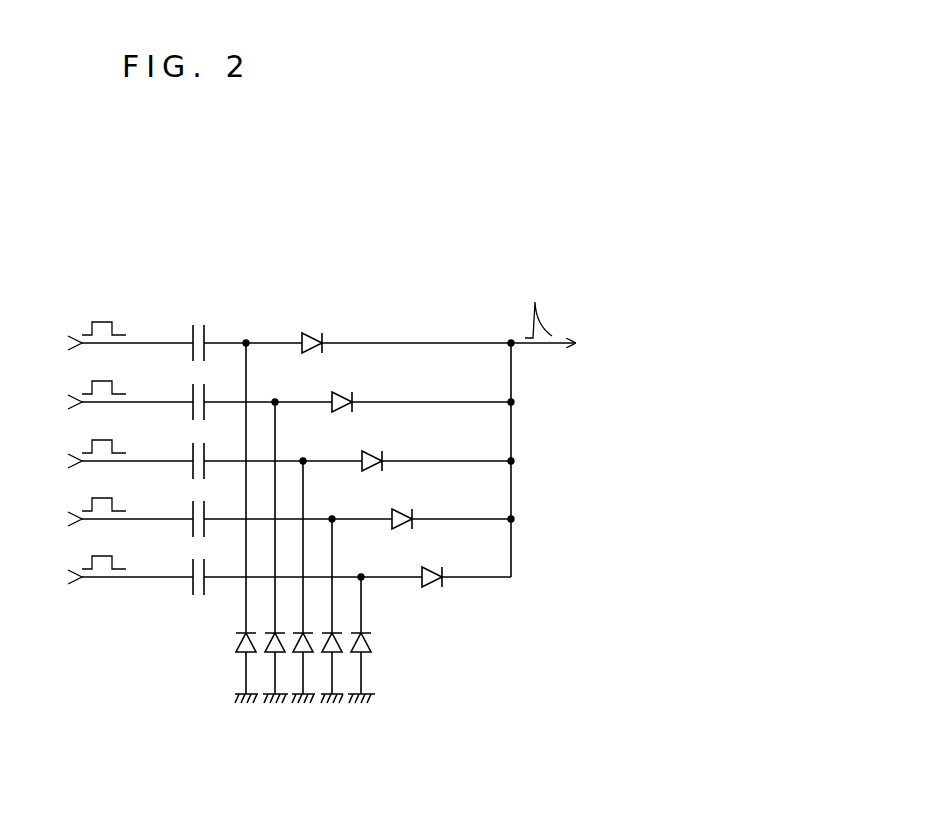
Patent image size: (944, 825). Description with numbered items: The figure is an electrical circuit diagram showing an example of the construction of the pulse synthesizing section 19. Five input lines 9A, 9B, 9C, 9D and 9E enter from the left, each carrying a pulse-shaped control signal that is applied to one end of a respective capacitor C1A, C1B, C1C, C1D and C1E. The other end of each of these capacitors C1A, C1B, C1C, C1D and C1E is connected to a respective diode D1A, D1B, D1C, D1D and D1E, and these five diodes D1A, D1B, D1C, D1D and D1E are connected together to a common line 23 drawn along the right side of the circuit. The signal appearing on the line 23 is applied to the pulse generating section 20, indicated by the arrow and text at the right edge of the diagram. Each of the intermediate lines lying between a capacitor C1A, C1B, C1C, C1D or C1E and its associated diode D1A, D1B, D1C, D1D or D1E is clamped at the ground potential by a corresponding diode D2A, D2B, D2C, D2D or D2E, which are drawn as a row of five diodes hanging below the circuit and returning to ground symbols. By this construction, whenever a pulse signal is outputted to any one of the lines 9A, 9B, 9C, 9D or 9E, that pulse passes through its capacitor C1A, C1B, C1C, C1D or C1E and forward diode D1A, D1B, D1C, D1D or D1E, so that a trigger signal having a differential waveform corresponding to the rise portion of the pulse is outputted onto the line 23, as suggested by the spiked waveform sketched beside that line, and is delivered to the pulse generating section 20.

The pulse synthesizing section 19 is at (270, 282).
The line 9A is at (71, 342).
The line 9B is at (71, 401).
The line 9C is at (71, 460).
The line 9D is at (71, 518).
The line 9E is at (71, 576).
The capacitor C1A is at (192, 332).
The capacitor C1B is at (207, 391).
The capacitor C1C is at (222, 450).
The capacitor C1D is at (237, 509).
The capacitor C1E is at (252, 566).
The diode D1A is at (406, 324).
The diode D1B is at (421, 383).
The diode D1C is at (436, 444).
The diode D1D is at (451, 503).
The diode D1E is at (466, 559).
The diode D2A is at (237, 640).
The diode D2B is at (275, 657).
The diode D2C is at (303, 657).
The diode D2D is at (333, 657).
The diode D2E is at (372, 641).
The line 23 is at (540, 350).
The pulse generating section 20 is at (655, 362).